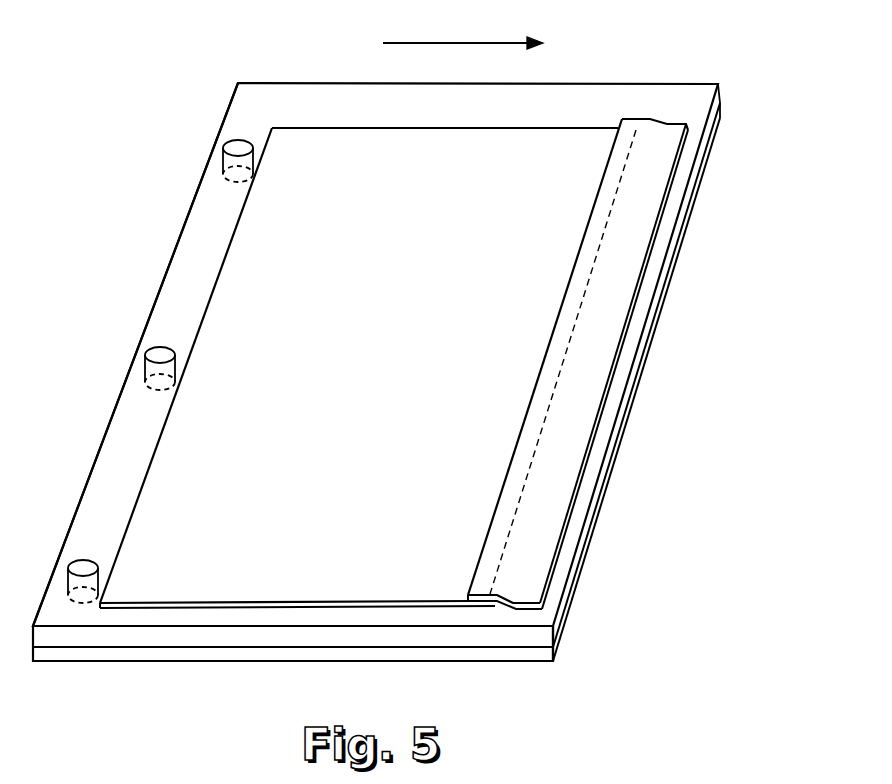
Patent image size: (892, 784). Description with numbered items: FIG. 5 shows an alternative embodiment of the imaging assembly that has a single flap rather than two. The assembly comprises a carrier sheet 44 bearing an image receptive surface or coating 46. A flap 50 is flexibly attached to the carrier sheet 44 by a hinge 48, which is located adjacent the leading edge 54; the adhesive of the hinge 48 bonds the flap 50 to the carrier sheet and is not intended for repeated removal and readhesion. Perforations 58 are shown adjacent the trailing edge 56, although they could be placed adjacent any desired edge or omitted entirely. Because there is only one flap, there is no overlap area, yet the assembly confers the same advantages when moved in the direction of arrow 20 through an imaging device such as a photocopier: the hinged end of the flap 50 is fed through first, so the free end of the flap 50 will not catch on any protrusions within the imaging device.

The arrow 20 is at (472, 43).
The carrier sheet 44 is at (510, 638).
The image receptive surface or coating 46 is at (419, 654).
The hinge 48 is at (577, 364).
The flap 50 is at (355, 364).
The leading edge 54 is at (640, 402).
The trailing edge 56 is at (177, 223).
The perforations 58 is at (232, 143).